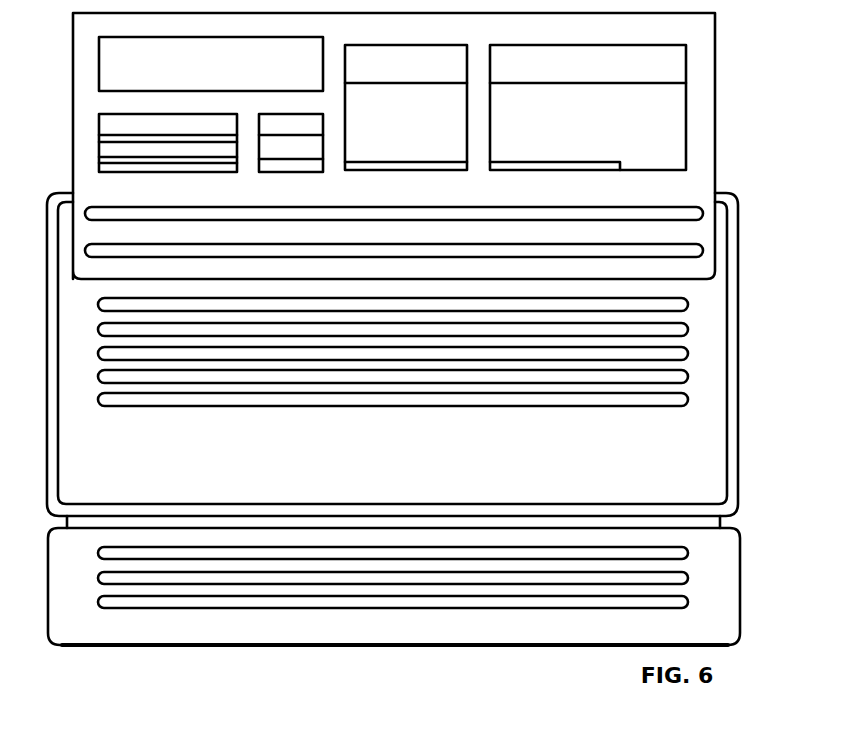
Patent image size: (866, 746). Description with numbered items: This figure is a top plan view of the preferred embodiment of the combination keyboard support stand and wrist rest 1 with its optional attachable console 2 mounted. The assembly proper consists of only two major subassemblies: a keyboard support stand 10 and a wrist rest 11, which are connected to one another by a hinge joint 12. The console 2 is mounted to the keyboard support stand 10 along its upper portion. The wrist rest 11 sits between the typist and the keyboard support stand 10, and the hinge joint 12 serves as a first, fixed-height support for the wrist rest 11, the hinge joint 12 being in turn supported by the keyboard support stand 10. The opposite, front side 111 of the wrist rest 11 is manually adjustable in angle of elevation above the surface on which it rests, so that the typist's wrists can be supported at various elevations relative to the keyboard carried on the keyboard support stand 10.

The combination keyboard support stand and wrist rest 1 is at (740, 407).
The console 2 is at (711, 101).
The keyboard support stand 10 is at (713, 355).
The wrist rest 11 is at (727, 618).
The hinge joint 12 is at (713, 553).
The front side 111 is at (455, 646).